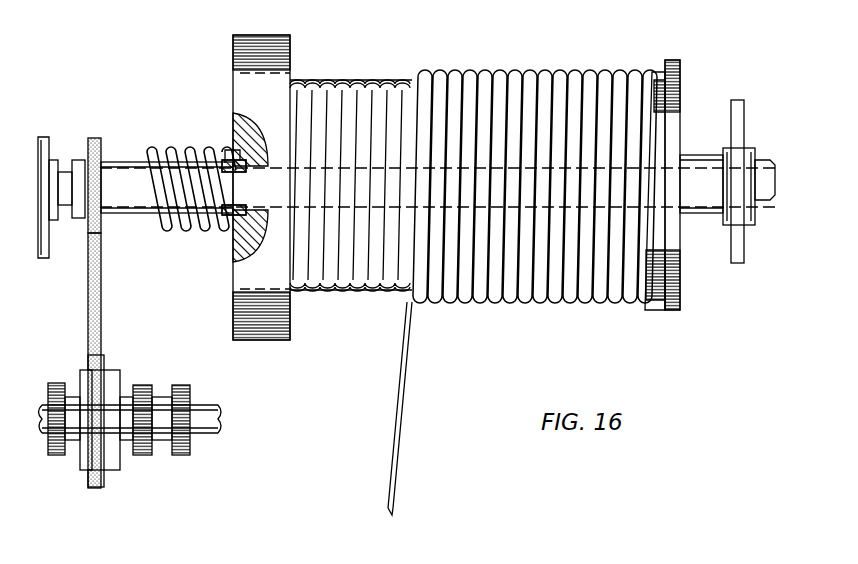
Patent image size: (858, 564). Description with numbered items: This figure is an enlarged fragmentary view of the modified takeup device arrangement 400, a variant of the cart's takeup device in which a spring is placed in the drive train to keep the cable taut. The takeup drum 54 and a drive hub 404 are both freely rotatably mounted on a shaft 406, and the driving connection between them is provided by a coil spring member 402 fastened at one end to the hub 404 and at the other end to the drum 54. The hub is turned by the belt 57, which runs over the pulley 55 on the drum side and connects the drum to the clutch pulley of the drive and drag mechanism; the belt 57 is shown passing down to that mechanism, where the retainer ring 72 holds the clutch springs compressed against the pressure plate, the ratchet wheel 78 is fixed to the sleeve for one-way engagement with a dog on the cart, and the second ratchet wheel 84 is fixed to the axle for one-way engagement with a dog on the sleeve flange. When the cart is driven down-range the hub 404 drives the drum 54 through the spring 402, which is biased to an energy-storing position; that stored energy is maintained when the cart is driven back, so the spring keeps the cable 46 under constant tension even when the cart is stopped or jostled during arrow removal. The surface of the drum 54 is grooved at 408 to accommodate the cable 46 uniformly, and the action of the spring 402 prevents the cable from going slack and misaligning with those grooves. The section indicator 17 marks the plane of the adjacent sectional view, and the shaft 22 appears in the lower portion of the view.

The section line 17- 17 is at (150, 35).
The drive shaft 22 is at (206, 410).
The cable 46 is at (400, 481).
The takeup drum 54 is at (281, 58).
The pulley 55 is at (101, 150).
The belt 57 is at (101, 302).
The retainer ring 72 is at (145, 456).
The ratchet wheel 78 is at (180, 456).
The second ratchet wheel 84 is at (56, 456).
The modified takeup device arrangement 400 is at (603, 323).
The coil spring member 402 is at (186, 228).
The drive hub 404 is at (131, 165).
The shaft 406 is at (250, 182).
The grooves 408 is at (346, 86).